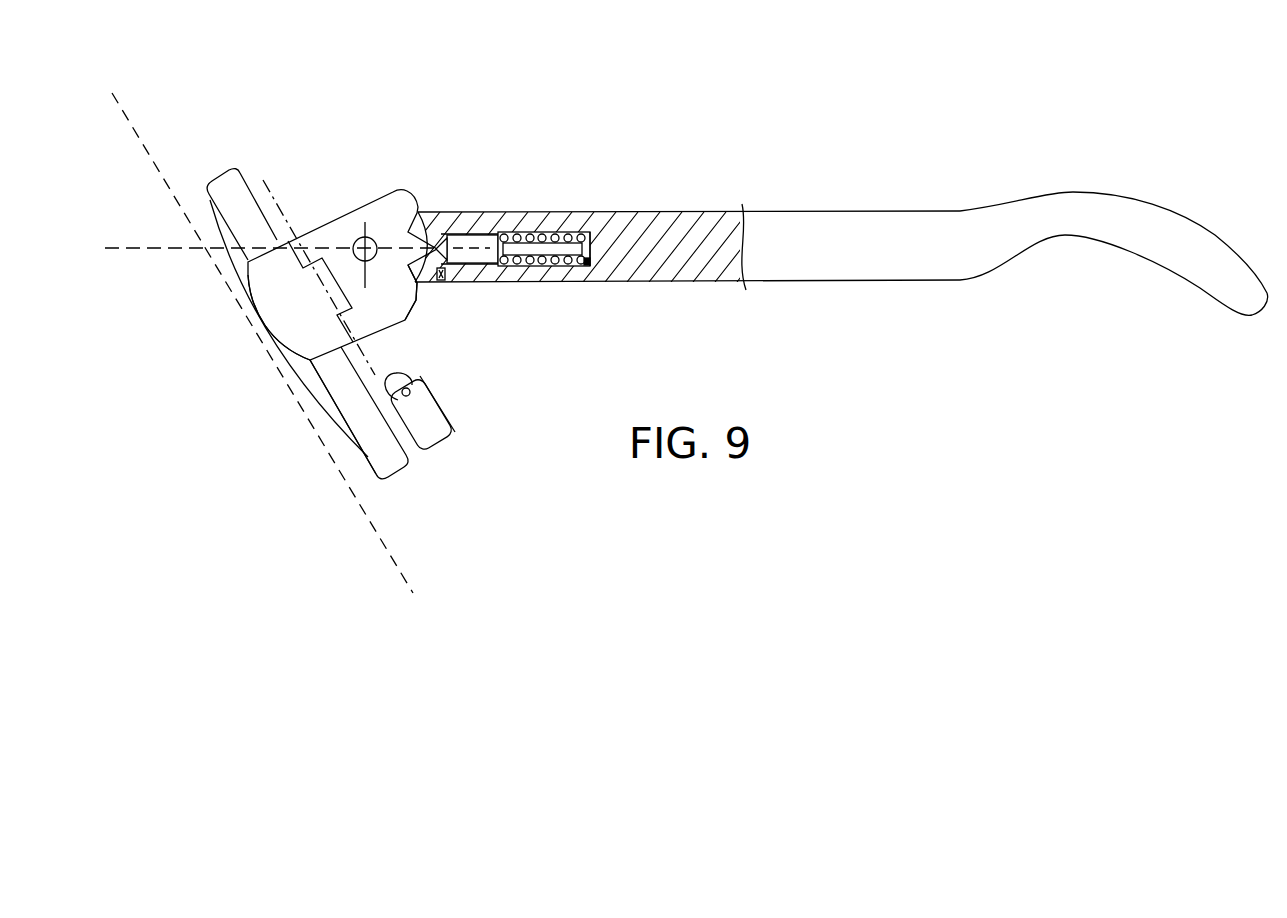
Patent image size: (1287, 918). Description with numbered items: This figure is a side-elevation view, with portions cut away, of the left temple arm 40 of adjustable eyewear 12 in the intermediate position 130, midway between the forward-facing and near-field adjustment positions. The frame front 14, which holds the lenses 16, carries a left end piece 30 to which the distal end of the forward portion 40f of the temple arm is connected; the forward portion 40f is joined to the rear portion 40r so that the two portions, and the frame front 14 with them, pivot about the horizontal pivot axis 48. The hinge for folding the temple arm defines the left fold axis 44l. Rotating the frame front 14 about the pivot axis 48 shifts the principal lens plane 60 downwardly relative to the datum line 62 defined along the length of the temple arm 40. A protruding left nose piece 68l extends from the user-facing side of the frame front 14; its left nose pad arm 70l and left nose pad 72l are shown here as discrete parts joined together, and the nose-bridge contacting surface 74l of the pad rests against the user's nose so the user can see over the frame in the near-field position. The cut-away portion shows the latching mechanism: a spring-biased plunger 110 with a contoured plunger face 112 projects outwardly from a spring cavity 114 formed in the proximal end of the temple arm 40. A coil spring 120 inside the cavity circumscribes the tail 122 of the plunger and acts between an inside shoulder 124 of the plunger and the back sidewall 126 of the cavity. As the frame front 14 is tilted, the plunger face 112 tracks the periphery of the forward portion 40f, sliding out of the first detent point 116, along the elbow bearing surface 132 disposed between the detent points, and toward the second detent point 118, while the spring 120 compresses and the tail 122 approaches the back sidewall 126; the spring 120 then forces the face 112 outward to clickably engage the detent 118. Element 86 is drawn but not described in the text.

The adjustable eyewear 12 is at (629, 108).
The frame front 14 is at (235, 190).
The lenses 16 is at (325, 405).
The left end piece 30 is at (292, 327).
The left temple arm 40 is at (853, 212).
The forward portion 40f is at (340, 230).
The rear portion 40r is at (970, 227).
The left fold axis 44l is at (278, 203).
The pivot axis 48 is at (378, 226).
The principal lens plane 60 is at (125, 115).
The datum line 62 is at (133, 252).
The left nose piece 68l is at (423, 476).
The left nose pad arm 70l is at (400, 378).
The left nose pad 72l is at (438, 441).
The nose-bridge contacting surface 74l is at (443, 401).
The spring band 86 is at (209, 183).
The spring-biased plunger 110 is at (483, 234).
The plunger face 112 is at (444, 234).
The spring cavity 114 is at (570, 268).
The first detent point 116 is at (428, 212).
The second detent point 118 is at (418, 290).
The coil spring 120 is at (563, 232).
The tail 122 is at (541, 256).
The inside shoulder 124 is at (505, 232).
The back sidewall 126 is at (592, 270).
The intermediate position 130 is at (328, 493).
The elbow bearing surface 132 is at (441, 280).